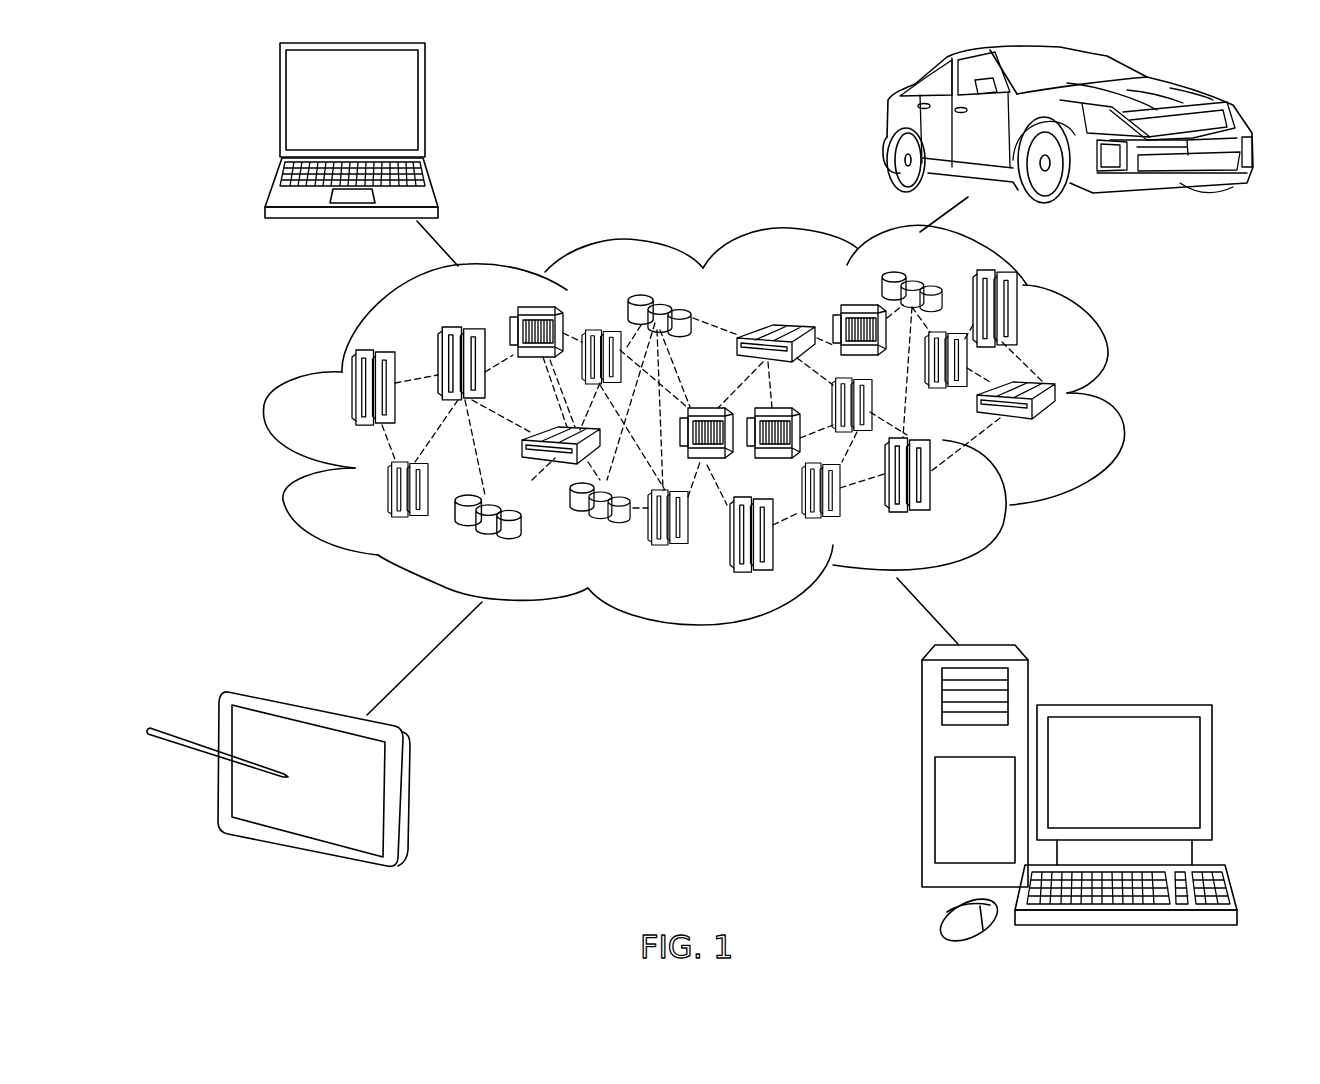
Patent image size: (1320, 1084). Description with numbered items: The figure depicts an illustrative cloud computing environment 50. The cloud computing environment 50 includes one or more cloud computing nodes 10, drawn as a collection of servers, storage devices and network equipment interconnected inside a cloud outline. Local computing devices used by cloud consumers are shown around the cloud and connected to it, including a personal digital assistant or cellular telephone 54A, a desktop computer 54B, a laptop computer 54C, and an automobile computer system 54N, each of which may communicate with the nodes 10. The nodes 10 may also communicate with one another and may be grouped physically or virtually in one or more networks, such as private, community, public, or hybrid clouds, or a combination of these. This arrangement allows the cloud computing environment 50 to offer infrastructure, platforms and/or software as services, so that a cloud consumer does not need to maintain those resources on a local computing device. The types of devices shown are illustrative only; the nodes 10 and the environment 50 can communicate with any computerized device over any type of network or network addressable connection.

The cloud computing environment 50 is at (1120, 397).
The cloud computing nodes 10 is at (1060, 428).
The personal digital assistant or cellular telephone 54A is at (413, 806).
The desktop computer 54B is at (1120, 704).
The laptop computer 54C is at (425, 109).
The automobile computer system 54N is at (884, 122).